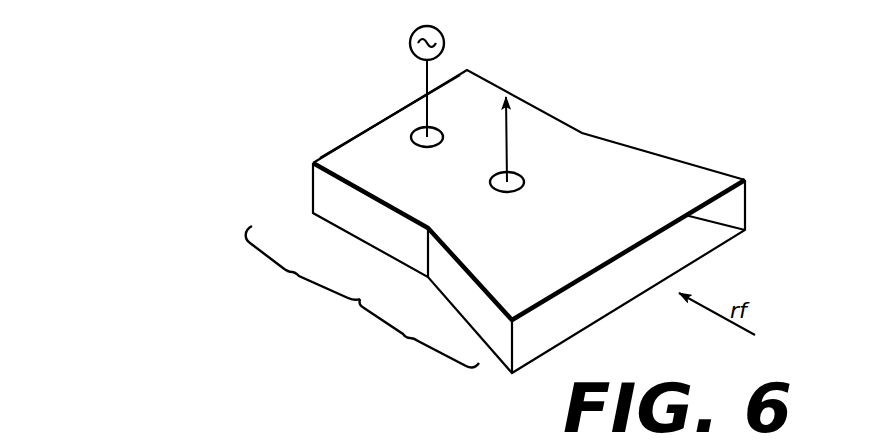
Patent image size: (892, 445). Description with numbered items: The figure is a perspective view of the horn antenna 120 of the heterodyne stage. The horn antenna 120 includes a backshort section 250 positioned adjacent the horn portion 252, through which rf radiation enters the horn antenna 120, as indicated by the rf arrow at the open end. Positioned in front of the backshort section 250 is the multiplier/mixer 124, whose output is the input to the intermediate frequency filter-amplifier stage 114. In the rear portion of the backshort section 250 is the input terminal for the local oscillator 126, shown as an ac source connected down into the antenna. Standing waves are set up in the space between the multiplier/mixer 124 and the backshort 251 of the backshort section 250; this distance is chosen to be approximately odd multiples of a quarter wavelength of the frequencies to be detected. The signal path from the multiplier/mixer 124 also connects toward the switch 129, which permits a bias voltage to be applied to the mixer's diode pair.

The horn antenna 120 is at (748, 180).
The backshort 251 is at (358, 133).
The local oscillator 126 is at (442, 34).
The switch 129 is at (506, 121).
The multiplier/mixer 124 is at (513, 174).
The intermediate frequency filter-amplifier stage 114 is at (533, 124).
The backshort section 250 is at (303, 263).
The horn portion 252 is at (420, 333).